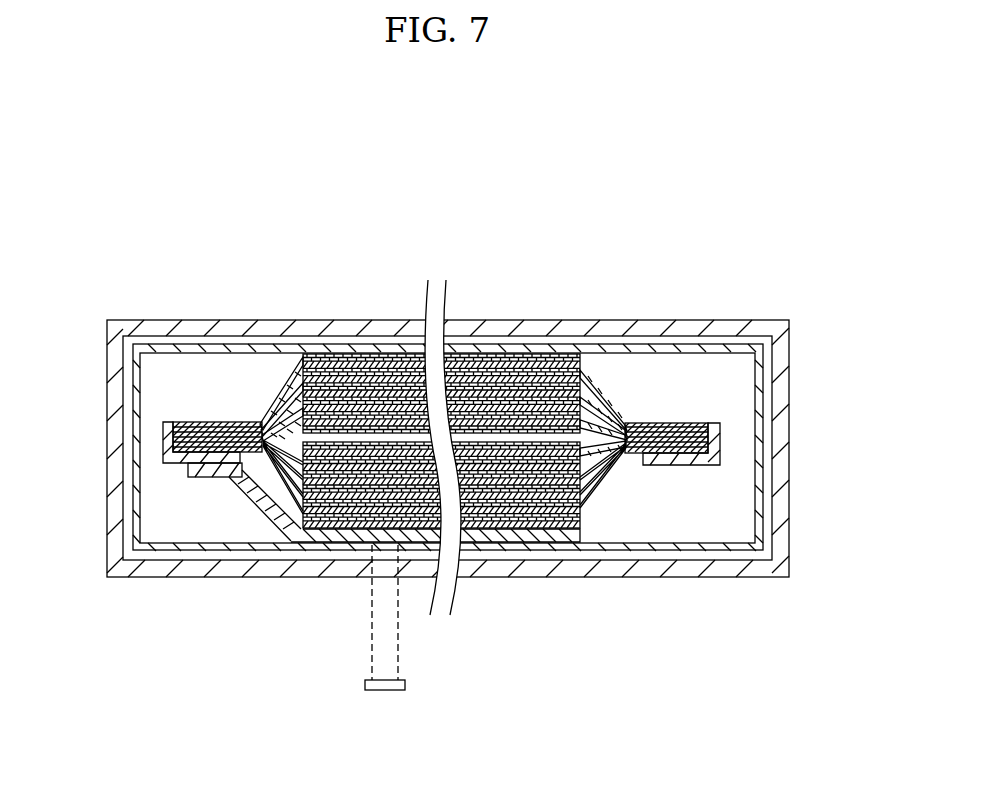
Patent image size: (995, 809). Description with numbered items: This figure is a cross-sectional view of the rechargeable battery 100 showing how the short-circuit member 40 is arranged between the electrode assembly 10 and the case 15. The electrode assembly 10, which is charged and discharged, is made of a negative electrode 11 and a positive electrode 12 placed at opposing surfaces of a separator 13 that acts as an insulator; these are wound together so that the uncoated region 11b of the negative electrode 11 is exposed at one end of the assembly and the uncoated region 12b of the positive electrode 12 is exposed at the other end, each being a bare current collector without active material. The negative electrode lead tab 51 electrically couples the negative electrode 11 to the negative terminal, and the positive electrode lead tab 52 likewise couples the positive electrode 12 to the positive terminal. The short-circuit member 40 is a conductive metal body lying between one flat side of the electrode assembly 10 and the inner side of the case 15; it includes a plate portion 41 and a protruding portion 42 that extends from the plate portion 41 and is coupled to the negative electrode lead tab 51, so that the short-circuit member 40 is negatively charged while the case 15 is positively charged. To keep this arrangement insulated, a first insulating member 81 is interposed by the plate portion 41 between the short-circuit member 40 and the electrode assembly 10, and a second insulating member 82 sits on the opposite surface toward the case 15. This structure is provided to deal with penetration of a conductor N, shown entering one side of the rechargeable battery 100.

The rechargeable battery 100 is at (456, 187).
The electrode assembly 10 is at (443, 446).
The negative electrode 11 is at (315, 355).
The positive electrode 12 is at (393, 355).
The separator 13 is at (352, 355).
The uncoated region of the negative electrode 11b is at (207, 422).
The uncoated region of the positive electrode 12b is at (680, 423).
The case 15 is at (257, 578).
The short-circuit member 40 is at (316, 608).
The plate portion 41 is at (356, 543).
The protruding portion 42 is at (205, 478).
The negative electrode lead tab 51 is at (172, 464).
The positive electrode lead tab 52 is at (690, 466).
The first insulating member 81 is at (553, 543).
The second insulating member 82 is at (646, 551).
The conductor N is at (400, 656).